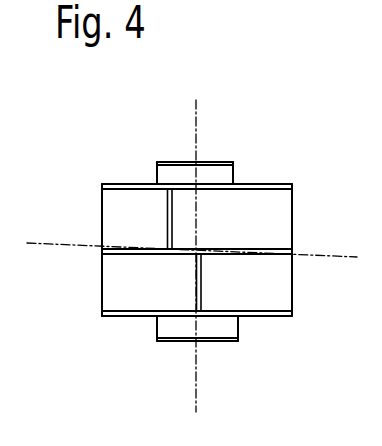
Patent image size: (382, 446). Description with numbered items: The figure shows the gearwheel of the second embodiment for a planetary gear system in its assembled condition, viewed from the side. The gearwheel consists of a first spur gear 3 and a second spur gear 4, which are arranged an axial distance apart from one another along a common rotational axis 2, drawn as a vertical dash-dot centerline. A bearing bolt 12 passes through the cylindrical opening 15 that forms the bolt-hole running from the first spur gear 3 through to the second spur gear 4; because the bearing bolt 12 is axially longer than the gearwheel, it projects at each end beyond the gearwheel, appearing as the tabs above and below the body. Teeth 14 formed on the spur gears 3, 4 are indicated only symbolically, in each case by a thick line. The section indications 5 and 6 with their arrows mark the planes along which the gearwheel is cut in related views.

The common rotational axis 2 is at (198, 140).
The first spur gear 3 is at (117, 291).
The second spur gear 4 is at (110, 212).
The bearing bolt 12 is at (234, 180).
The teeth 14 is at (162, 212).
The cylindrical opening 15 is at (240, 355).
The section line V-V 5 is at (192, 117).
The section line VI-VI 6 is at (42, 243).